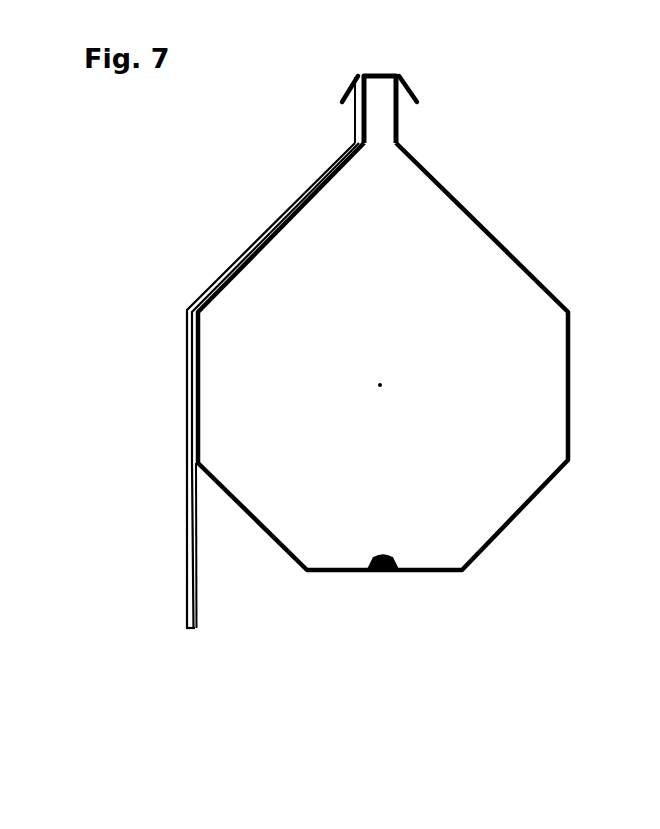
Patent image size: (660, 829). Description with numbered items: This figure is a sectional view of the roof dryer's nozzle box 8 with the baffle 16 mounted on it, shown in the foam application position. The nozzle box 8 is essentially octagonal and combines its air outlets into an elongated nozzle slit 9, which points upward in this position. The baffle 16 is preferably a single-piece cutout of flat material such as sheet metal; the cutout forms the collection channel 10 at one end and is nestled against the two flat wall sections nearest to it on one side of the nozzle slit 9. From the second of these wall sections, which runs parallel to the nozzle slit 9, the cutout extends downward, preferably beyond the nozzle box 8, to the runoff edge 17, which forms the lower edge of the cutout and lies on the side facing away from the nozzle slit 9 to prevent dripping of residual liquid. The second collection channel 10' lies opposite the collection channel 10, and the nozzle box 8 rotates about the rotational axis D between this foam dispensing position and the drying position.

The nozzle box 8 is at (469, 214).
The nozzle slit 9 is at (384, 74).
The collection channel 10 is at (323, 75).
The collection channel 10' is at (435, 74).
The baffle 16 is at (205, 292).
The runoff edge 17 is at (185, 620).
The rotational axis nozzle box D is at (391, 381).